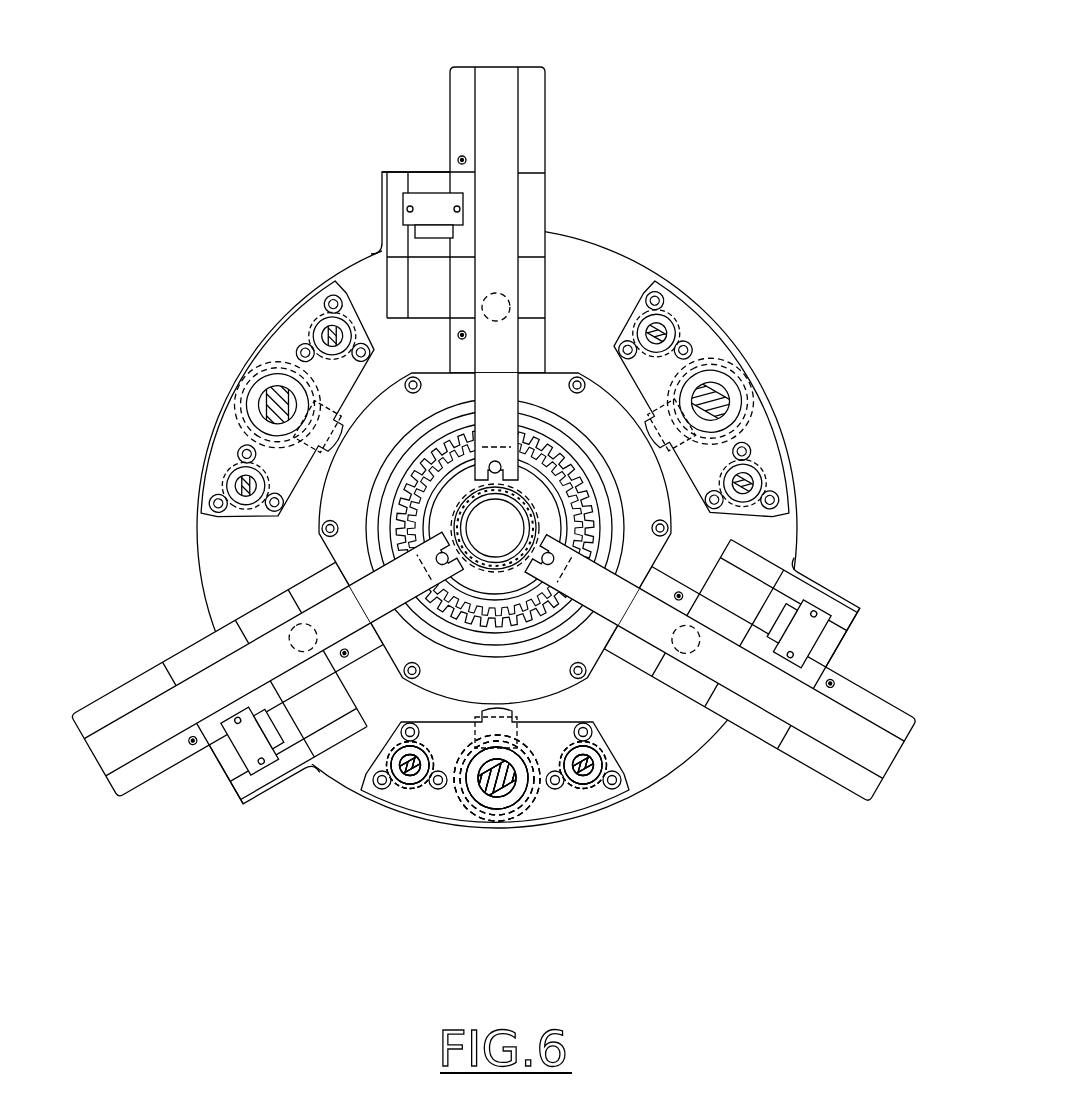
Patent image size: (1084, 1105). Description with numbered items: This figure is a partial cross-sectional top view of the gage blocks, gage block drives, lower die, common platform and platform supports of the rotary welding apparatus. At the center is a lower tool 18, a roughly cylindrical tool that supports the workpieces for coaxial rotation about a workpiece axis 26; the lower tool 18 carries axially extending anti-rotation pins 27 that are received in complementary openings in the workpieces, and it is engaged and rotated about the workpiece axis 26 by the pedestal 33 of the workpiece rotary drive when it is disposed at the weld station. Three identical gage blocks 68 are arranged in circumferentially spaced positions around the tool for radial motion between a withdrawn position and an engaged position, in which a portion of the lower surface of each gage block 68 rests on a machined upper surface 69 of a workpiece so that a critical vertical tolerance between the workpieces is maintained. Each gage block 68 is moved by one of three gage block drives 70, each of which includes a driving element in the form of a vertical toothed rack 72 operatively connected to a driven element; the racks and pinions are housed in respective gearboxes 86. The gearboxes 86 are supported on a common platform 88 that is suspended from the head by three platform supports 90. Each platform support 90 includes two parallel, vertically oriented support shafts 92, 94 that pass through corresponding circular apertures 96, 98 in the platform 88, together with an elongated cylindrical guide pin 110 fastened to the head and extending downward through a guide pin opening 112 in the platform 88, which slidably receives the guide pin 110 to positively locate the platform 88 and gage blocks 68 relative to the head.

The lower tool 18 is at (561, 556).
The workpiece axis 26 is at (495, 528).
The anti-rotation pin 27 is at (447, 557).
The pedestal 33 is at (452, 477).
The gage block 68 is at (503, 407).
The machined upper surface 69 is at (425, 530).
The gage block drive 70 is at (549, 95).
The vertical toothed rack 72 is at (432, 205).
The gearbox 86 is at (497, 67).
The common platform 88 is at (680, 742).
The platform support 90 is at (556, 812).
The support shaft 92 is at (608, 772).
The support shaft 94 is at (394, 774).
The circular aperture 96 is at (586, 756).
The circular aperture 98 is at (412, 762).
The guide pin 110 is at (508, 786).
The guide pin opening 112 is at (492, 780).